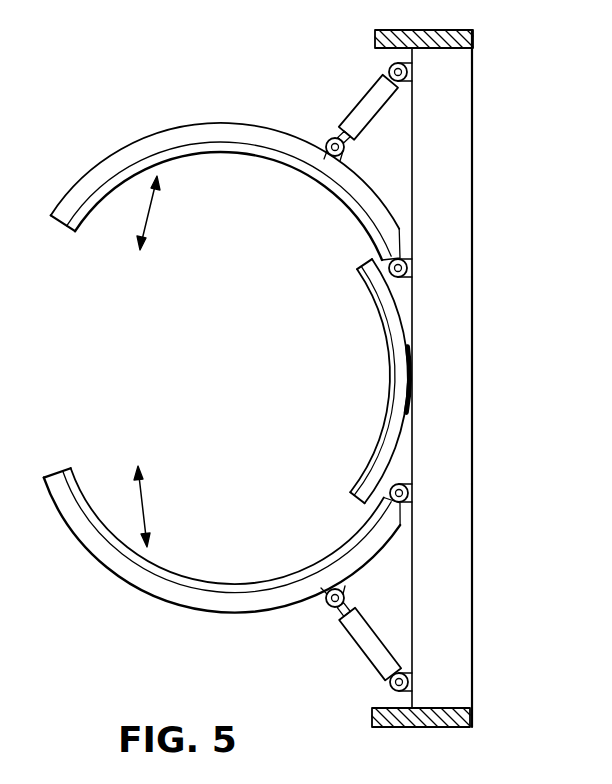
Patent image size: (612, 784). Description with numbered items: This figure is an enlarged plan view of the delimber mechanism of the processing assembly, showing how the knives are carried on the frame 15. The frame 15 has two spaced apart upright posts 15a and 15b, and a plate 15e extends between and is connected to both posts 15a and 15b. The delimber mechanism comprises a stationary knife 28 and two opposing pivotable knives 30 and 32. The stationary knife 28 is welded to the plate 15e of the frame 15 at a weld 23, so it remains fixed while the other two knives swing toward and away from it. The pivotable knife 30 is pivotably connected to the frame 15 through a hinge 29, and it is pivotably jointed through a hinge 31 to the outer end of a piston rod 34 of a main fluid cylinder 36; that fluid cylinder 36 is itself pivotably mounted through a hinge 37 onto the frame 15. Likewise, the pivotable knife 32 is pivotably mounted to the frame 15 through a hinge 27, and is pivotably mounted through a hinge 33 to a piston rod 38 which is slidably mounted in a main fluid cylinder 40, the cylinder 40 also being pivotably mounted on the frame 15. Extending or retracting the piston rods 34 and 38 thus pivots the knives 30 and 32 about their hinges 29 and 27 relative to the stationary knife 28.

The frame 15 is at (464, 378).
The upright post 15a is at (472, 718).
The upright post 15b is at (474, 43).
The plate 15e is at (458, 155).
The weld 23 is at (413, 380).
The hinge 27 is at (406, 265).
The stationary knife 28 is at (388, 371).
The hinge 29 is at (408, 491).
The pivotable knife 30 is at (170, 594).
The hinge 31 is at (344, 597).
The pivotable knife 32 is at (108, 165).
The hinge 33 is at (330, 155).
The piston rod 34 is at (340, 612).
The main fluid cylinder 36 is at (370, 643).
The hinge 37 is at (392, 686).
The piston rod 38 is at (337, 130).
The main fluid cylinder 40 is at (362, 108).